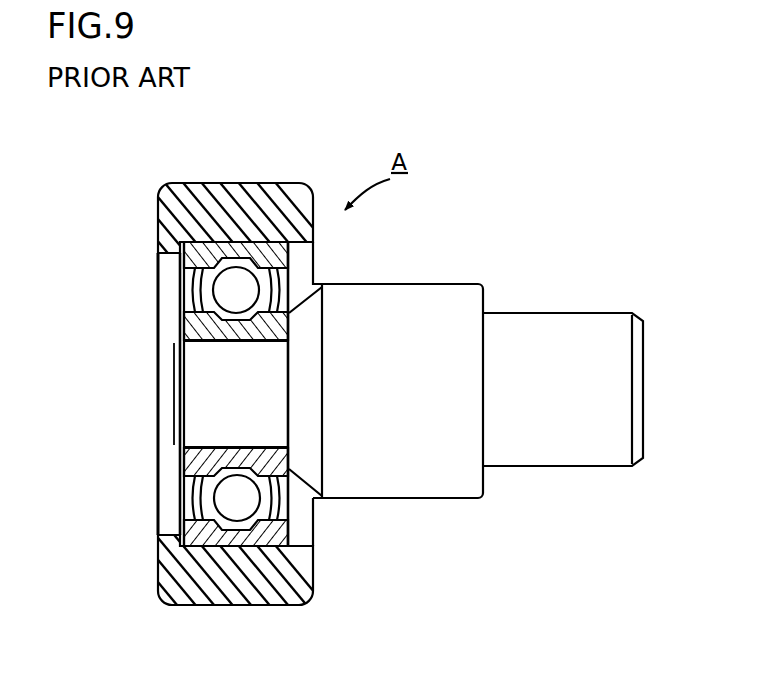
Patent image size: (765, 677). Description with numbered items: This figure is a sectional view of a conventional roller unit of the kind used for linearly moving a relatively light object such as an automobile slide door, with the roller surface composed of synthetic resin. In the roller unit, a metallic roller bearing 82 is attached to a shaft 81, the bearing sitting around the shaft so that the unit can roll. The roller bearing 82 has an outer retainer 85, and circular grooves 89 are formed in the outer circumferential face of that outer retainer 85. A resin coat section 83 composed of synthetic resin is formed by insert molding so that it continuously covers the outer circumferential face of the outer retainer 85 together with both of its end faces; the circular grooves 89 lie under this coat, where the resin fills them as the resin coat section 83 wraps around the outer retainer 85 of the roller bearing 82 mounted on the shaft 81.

The shaft 81 is at (554, 311).
The roller bearing 82 is at (191, 339).
The resin coat section 83 is at (207, 197).
The outer retainer 85 is at (165, 246).
The circular grooves 89 is at (211, 243).